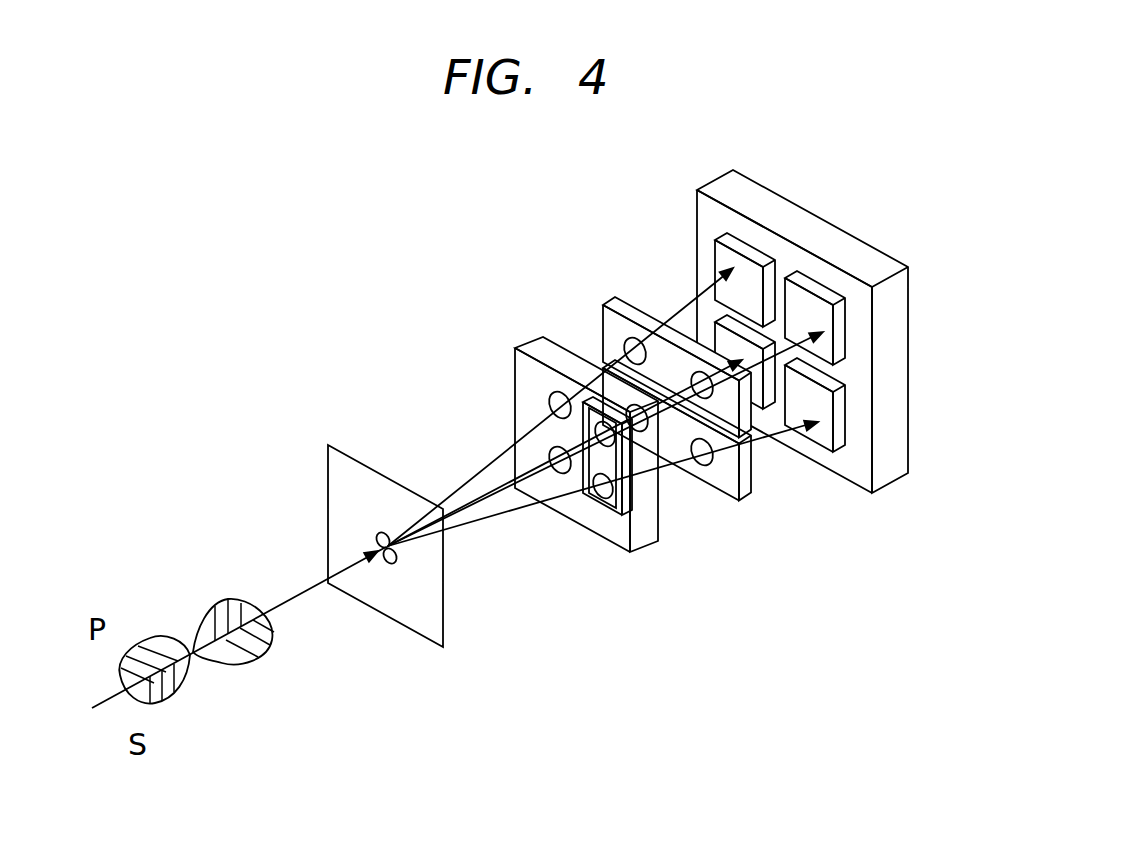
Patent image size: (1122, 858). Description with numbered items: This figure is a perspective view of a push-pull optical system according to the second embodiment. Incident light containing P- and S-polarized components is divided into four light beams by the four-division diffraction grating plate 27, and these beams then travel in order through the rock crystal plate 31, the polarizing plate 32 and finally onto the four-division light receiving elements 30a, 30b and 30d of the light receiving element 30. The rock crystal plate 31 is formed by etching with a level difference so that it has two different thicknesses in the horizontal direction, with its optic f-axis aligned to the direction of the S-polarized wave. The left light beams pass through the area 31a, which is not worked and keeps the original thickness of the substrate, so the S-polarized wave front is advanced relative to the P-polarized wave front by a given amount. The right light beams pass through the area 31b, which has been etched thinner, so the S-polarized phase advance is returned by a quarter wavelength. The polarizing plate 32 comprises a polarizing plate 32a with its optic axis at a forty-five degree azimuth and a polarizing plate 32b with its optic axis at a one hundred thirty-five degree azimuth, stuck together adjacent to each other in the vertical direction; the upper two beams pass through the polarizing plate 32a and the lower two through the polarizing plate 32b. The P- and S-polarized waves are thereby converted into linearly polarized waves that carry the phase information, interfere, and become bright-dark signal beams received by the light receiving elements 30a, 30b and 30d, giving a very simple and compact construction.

The four-division diffraction grating plate 27 is at (337, 487).
The light receiving element 30 is at (877, 257).
The light receiving element 30a is at (750, 263).
The light receiving element 30b is at (807, 302).
The light receiving element 30d is at (825, 440).
The rock crystal plate 31 is at (548, 470).
The area 31a is at (557, 443).
The area 31b is at (633, 510).
The polarizing plate 32 is at (662, 405).
The polarizing plate 32a is at (627, 327).
The polarizing plate 32b is at (727, 483).